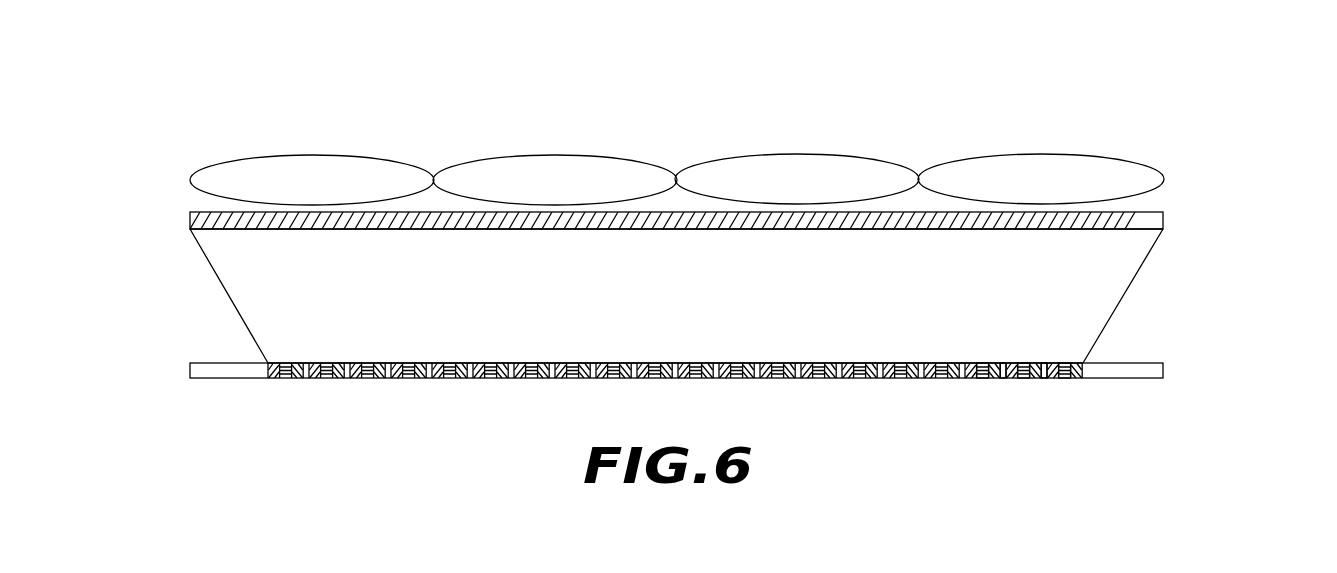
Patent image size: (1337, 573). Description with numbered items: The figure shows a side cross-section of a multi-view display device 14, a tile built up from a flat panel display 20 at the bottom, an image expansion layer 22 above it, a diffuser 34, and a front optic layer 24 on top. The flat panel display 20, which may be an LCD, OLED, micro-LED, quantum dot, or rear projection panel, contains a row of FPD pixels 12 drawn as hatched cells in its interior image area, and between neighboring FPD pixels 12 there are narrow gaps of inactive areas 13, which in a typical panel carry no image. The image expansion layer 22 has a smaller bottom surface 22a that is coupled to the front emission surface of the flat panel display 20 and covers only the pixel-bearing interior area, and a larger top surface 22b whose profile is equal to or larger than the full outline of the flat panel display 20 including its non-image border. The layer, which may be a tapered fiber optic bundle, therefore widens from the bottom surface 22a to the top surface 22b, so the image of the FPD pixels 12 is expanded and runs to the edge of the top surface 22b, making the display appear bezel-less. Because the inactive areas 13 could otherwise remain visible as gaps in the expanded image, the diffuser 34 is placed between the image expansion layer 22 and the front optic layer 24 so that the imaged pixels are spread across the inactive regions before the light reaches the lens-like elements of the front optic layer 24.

The multi-view display device 14 is at (236, 100).
The front optic layer 24 is at (1172, 172).
The diffuser 34 is at (1164, 224).
The image expansion layer 22 is at (1124, 293).
The top surface 22b is at (681, 219).
The bottom surface 22a is at (681, 373).
The flat panel display 20 is at (1184, 371).
The FPD pixels 12 is at (982, 380).
The inactive areas 13 is at (1004, 380).